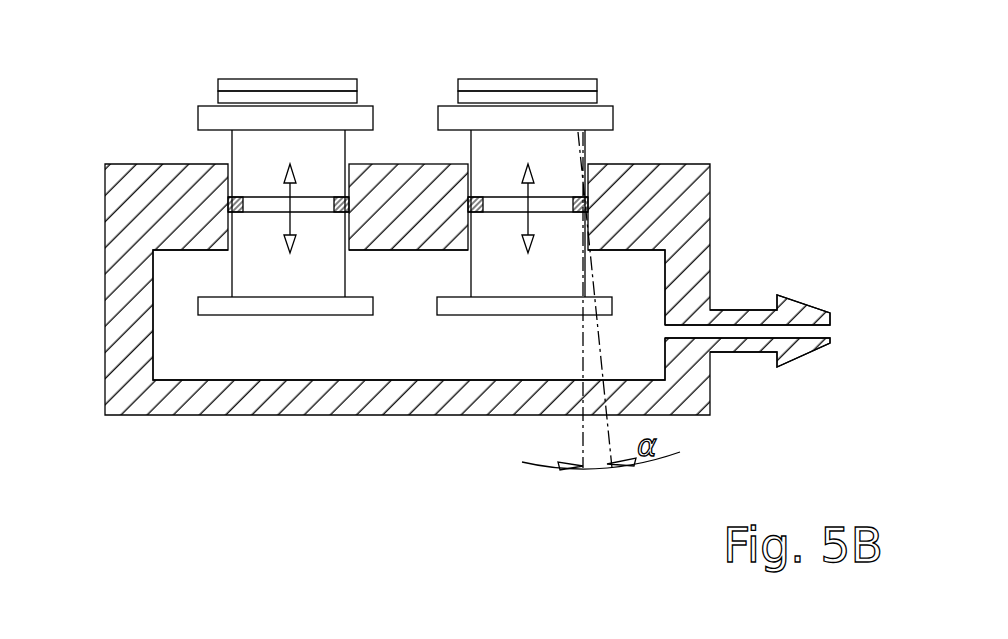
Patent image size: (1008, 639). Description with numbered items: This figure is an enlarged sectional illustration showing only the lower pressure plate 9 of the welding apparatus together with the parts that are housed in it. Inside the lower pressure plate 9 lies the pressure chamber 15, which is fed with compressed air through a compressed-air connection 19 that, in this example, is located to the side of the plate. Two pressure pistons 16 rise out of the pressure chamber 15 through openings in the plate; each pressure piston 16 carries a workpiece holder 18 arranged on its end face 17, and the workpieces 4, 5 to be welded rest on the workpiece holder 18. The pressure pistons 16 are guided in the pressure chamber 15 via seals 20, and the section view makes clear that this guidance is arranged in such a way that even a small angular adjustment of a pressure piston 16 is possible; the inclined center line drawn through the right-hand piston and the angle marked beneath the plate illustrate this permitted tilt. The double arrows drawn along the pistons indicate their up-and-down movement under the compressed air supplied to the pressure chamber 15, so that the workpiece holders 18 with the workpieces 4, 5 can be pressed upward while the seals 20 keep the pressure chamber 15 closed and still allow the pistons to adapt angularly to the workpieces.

The workpiece 4 is at (593, 82).
The workpiece 5 is at (590, 97).
The lower pressure plate 9 is at (703, 183).
The pressure chamber 15 is at (177, 345).
The pressure piston 16 is at (260, 154).
The end face 17 is at (206, 98).
The workpiece holder 18 is at (218, 118).
The compressed-air connection 19 is at (753, 313).
The seal 20 is at (387, 164).